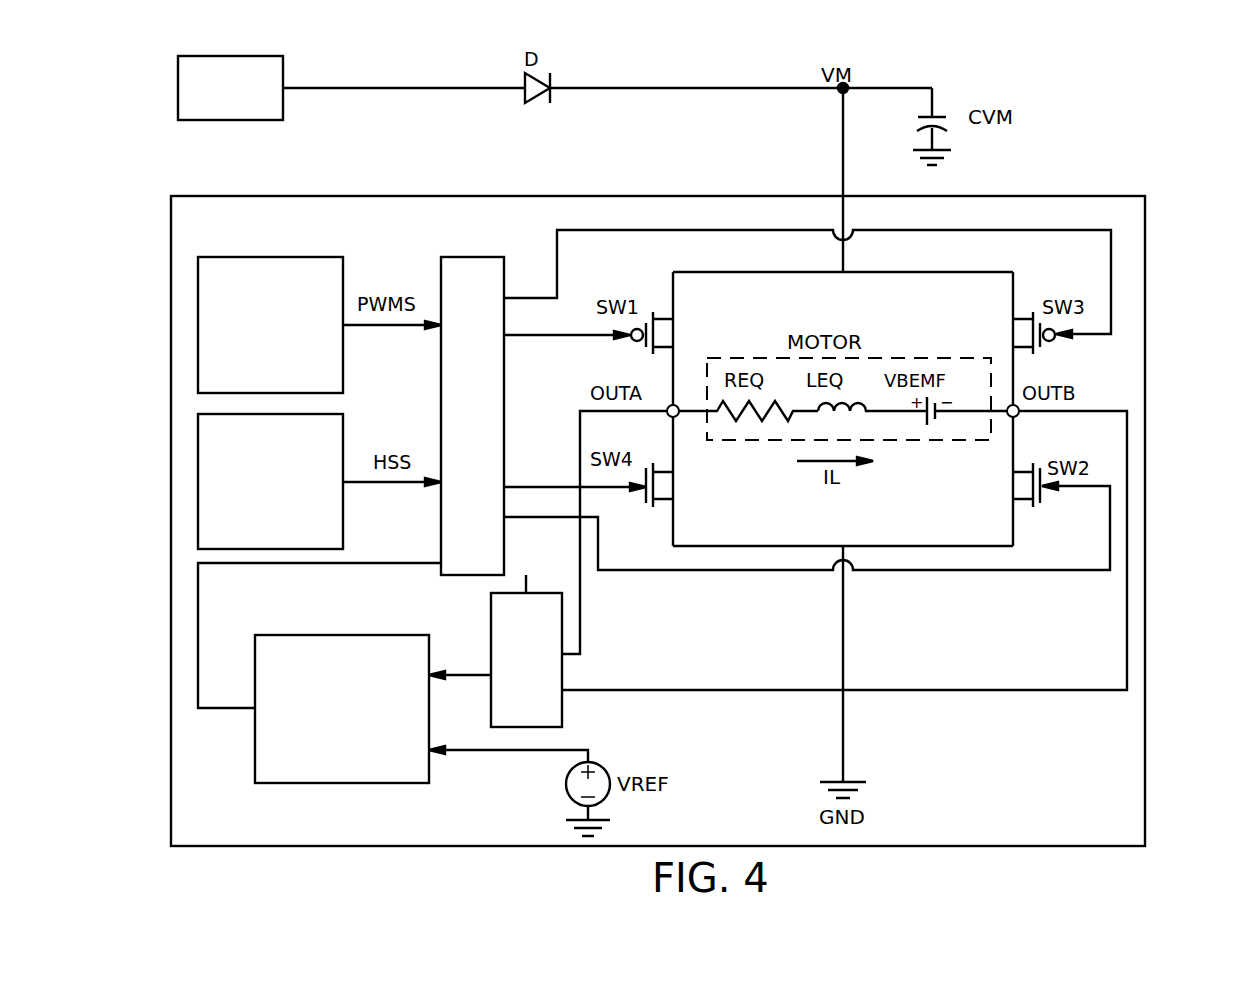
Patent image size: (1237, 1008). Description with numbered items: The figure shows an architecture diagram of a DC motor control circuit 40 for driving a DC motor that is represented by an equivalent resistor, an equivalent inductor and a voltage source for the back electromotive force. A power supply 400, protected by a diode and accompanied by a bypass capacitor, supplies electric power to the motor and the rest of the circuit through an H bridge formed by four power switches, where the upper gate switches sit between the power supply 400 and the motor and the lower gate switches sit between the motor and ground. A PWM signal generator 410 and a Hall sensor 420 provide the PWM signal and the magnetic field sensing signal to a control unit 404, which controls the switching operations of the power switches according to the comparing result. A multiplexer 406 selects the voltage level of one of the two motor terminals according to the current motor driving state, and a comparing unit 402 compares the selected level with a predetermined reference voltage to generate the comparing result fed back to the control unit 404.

The DC motor control circuit 40 is at (1093, 117).
The power supply 400 is at (178, 84).
The comparing unit 402 is at (255, 745).
The control unit 404 is at (461, 257).
The multiplexer 406 is at (491, 630).
The PWM signal generator 410 is at (198, 300).
The Hall sensor 420 is at (198, 460).